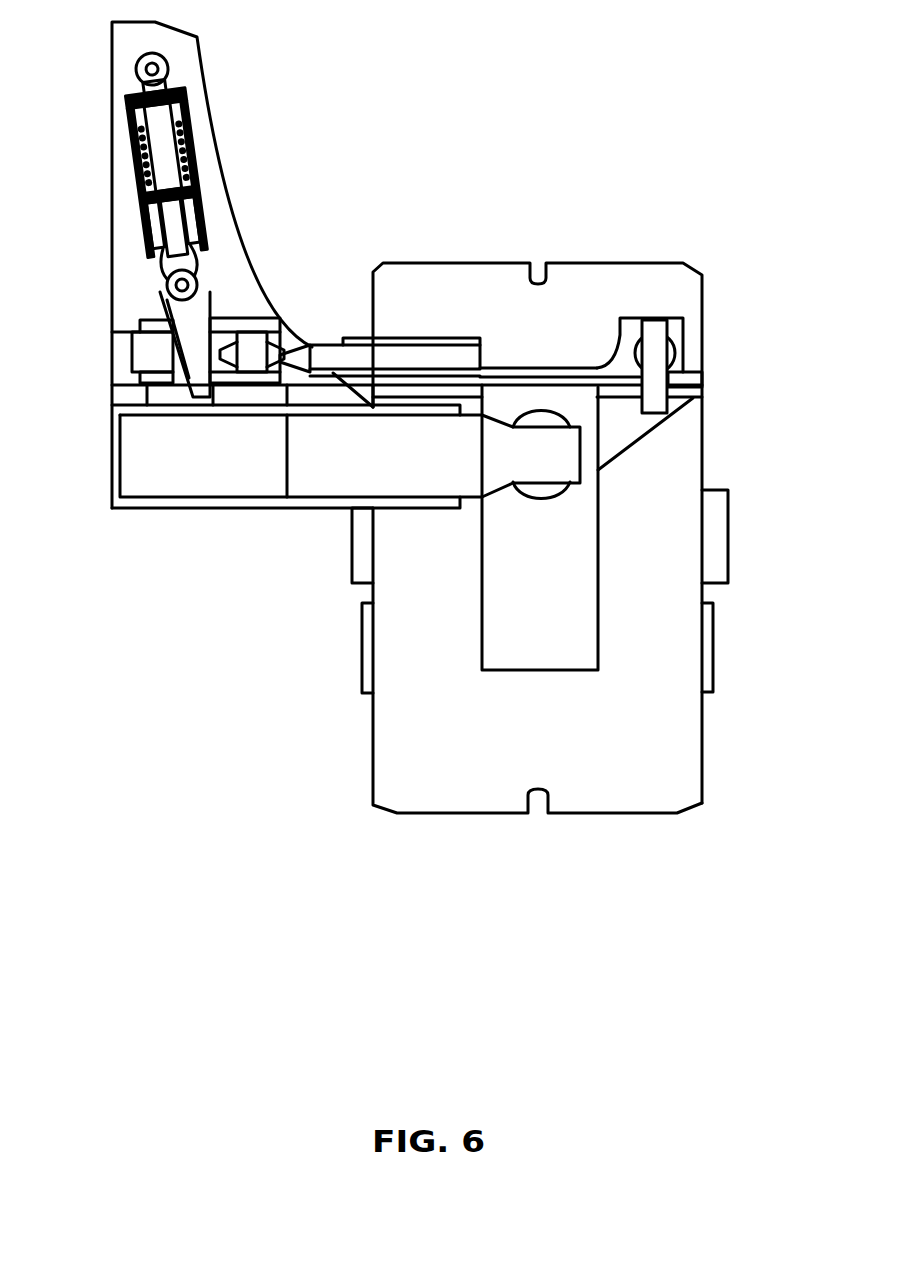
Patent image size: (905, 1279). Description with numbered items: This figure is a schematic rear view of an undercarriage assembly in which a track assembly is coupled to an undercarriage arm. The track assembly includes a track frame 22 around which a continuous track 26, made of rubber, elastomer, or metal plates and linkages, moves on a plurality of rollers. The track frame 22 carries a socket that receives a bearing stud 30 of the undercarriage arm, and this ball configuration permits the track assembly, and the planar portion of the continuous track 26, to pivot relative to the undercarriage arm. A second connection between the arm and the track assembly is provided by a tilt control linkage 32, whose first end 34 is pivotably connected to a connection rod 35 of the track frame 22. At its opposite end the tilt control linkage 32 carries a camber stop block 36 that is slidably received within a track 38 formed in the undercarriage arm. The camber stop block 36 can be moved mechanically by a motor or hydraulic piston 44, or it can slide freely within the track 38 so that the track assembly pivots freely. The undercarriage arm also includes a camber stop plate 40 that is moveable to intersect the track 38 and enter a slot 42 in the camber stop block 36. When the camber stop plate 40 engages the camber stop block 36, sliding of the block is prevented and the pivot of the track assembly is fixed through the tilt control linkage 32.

The track frame 22 is at (482, 663).
The continuous track 26 is at (437, 262).
The bearing stud 30 is at (560, 490).
The tilt control linkage 32 is at (367, 340).
The first end 34 is at (692, 367).
The connection rod 35 is at (653, 330).
The camber stop block 36 is at (132, 357).
The track 38 is at (120, 337).
The camber stop plate 40 is at (210, 278).
The slot 42 is at (163, 357).
The hydraulic piston 44 is at (195, 175).